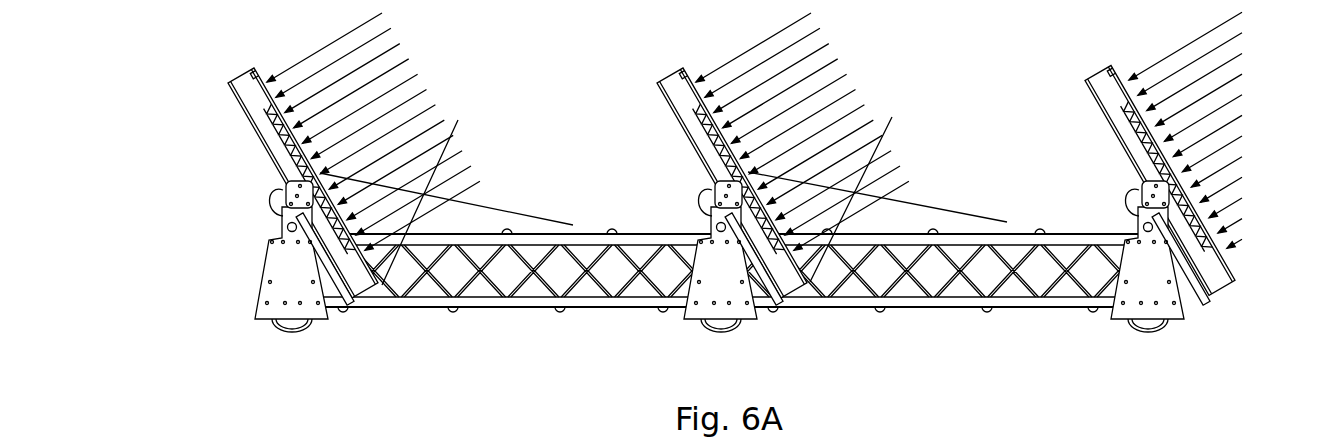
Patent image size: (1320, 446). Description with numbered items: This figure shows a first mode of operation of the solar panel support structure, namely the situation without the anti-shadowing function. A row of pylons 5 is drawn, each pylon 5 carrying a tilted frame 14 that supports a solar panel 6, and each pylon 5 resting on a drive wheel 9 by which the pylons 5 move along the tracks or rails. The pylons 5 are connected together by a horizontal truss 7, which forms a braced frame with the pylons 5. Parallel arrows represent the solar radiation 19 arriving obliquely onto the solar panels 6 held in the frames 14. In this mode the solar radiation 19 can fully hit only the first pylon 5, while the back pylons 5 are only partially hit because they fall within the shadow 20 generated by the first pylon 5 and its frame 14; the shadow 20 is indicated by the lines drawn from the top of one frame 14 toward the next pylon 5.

The pylon 5 is at (327, 327).
The solar panel 6 is at (283, 132).
The truss 7 is at (480, 318).
The drive wheel 9 is at (272, 334).
The frame 14 is at (249, 92).
The solar radiation 19 is at (408, 53).
The shadow 20 is at (478, 127).